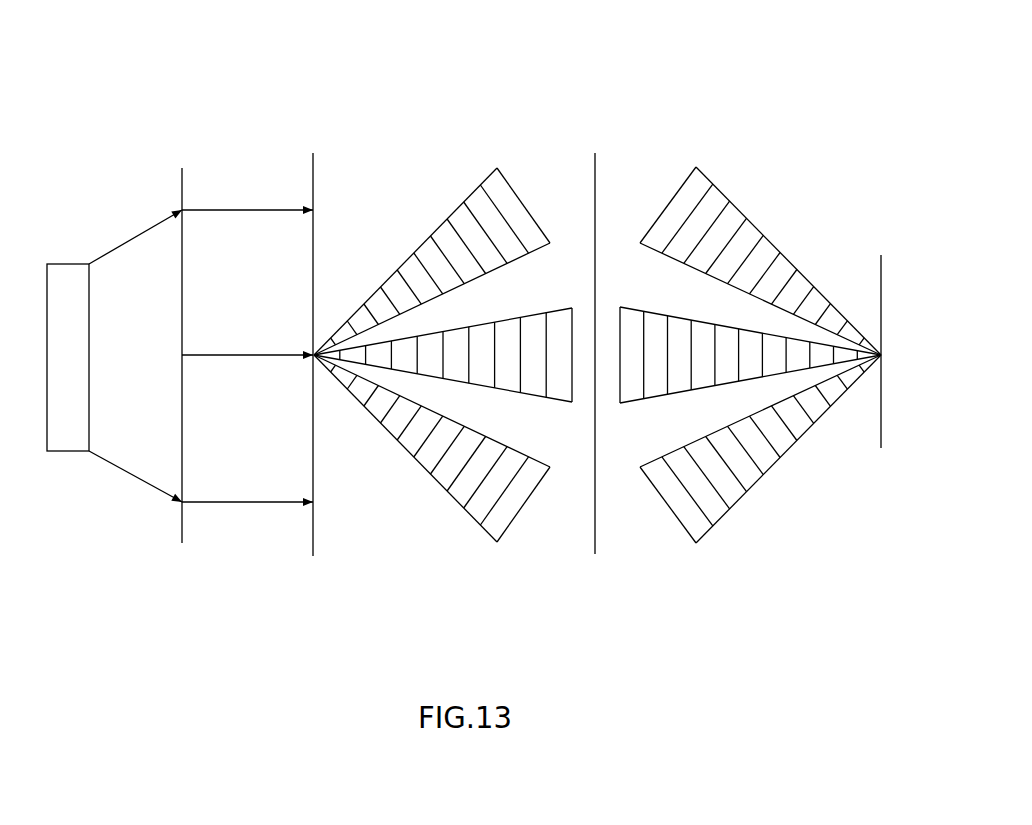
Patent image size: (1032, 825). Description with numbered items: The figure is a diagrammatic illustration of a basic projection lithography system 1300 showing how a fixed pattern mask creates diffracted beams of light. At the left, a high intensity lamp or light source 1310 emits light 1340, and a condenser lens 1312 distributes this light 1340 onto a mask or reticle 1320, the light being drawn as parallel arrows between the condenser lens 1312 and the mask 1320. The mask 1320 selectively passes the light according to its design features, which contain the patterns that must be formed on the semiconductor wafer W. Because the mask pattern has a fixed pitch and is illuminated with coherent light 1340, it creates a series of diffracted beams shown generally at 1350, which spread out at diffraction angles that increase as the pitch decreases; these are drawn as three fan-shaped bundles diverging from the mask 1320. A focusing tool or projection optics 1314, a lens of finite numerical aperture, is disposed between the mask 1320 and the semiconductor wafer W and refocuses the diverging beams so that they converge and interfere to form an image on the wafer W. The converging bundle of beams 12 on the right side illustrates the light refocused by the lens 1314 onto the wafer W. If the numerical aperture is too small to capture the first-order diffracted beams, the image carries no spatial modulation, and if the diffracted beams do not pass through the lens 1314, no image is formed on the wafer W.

The projection lithography system 1300 is at (757, 75).
The light source 1310 is at (60, 451).
The condenser lens 1312 is at (181, 532).
The mask 1320 is at (313, 532).
The projection optics 1314 is at (595, 529).
The light 1340 is at (225, 143).
The diffracted beams 1350 is at (413, 162).
The light beam 12 is at (720, 520).
The semiconductor wafer W is at (881, 418).